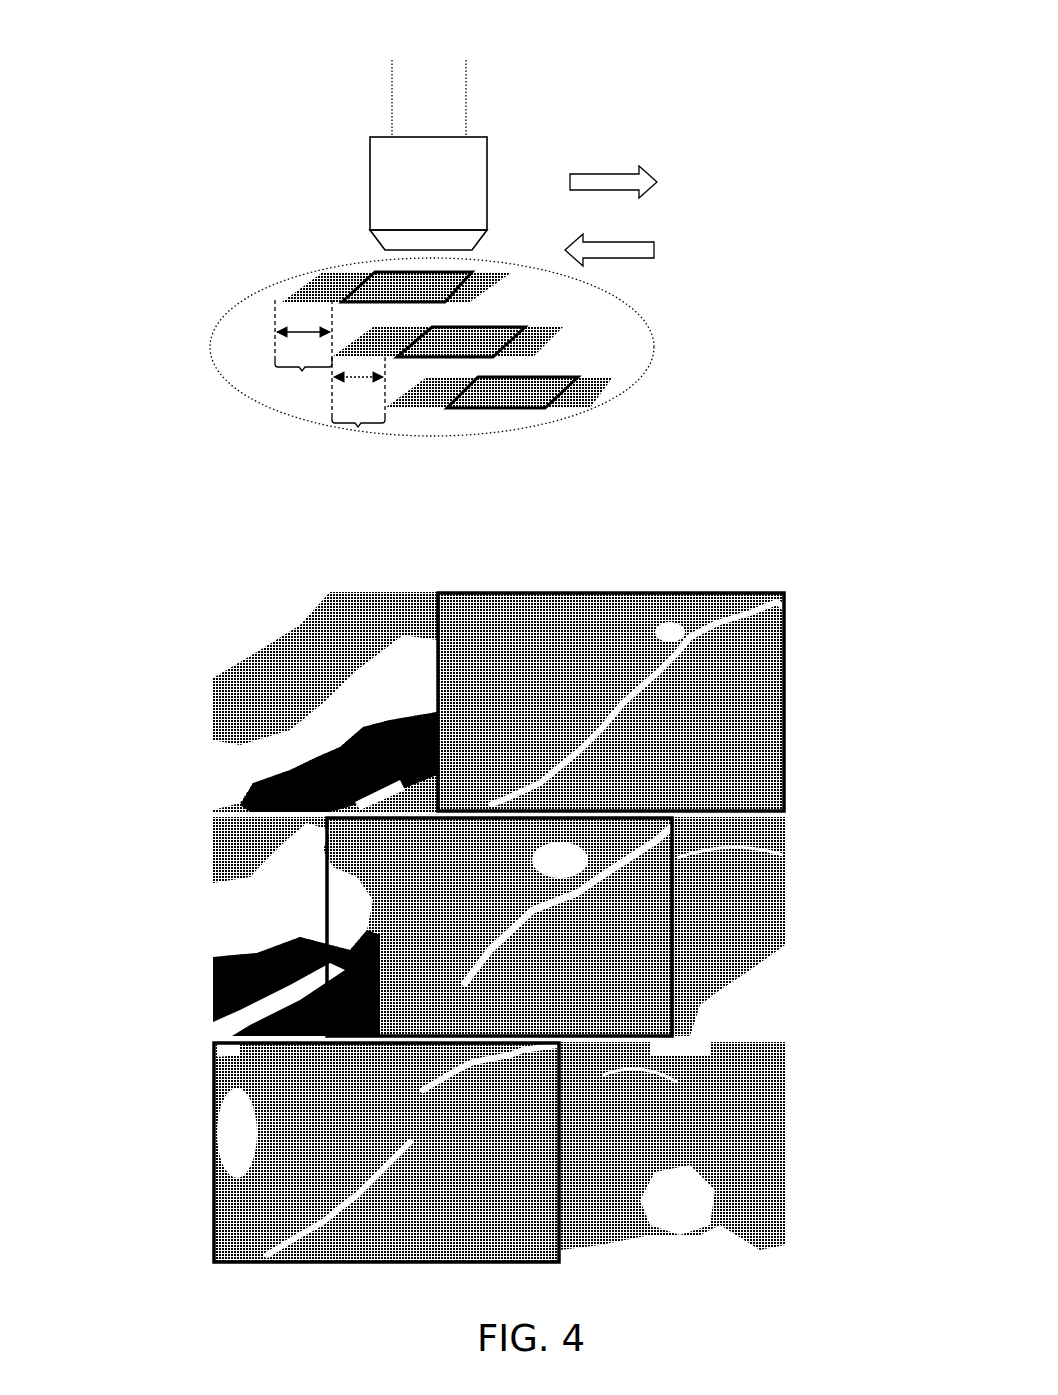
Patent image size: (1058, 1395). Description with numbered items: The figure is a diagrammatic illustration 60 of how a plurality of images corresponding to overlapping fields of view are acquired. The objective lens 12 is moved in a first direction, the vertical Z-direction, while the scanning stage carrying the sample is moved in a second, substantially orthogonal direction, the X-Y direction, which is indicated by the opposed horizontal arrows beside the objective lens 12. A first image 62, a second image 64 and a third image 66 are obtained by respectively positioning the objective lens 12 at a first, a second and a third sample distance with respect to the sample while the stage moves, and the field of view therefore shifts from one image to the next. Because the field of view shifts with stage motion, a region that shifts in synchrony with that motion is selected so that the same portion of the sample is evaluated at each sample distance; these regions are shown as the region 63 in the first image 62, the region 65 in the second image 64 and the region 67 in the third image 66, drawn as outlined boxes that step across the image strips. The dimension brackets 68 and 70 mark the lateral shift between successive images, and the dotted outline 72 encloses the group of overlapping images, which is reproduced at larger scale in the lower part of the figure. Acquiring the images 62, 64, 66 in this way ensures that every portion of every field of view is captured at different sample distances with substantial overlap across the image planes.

The diagrammatic illustration 60 is at (630, 42).
The objective lens 12 is at (488, 158).
The first image 62 is at (505, 289).
The region that shifts in synchrony with the motion of the scanning stage 63 is at (392, 272).
The second image 64 is at (547, 343).
The region that shifts in synchrony with the motion of the scanning stage 65 is at (428, 358).
The third image 66 is at (598, 393).
The region that shifts in synchrony with the motion of the scanning stage 67 is at (503, 408).
The first offset distance 68 is at (275, 331).
The second offset distance 70 is at (358, 381).
The composite image field 72 is at (656, 338).